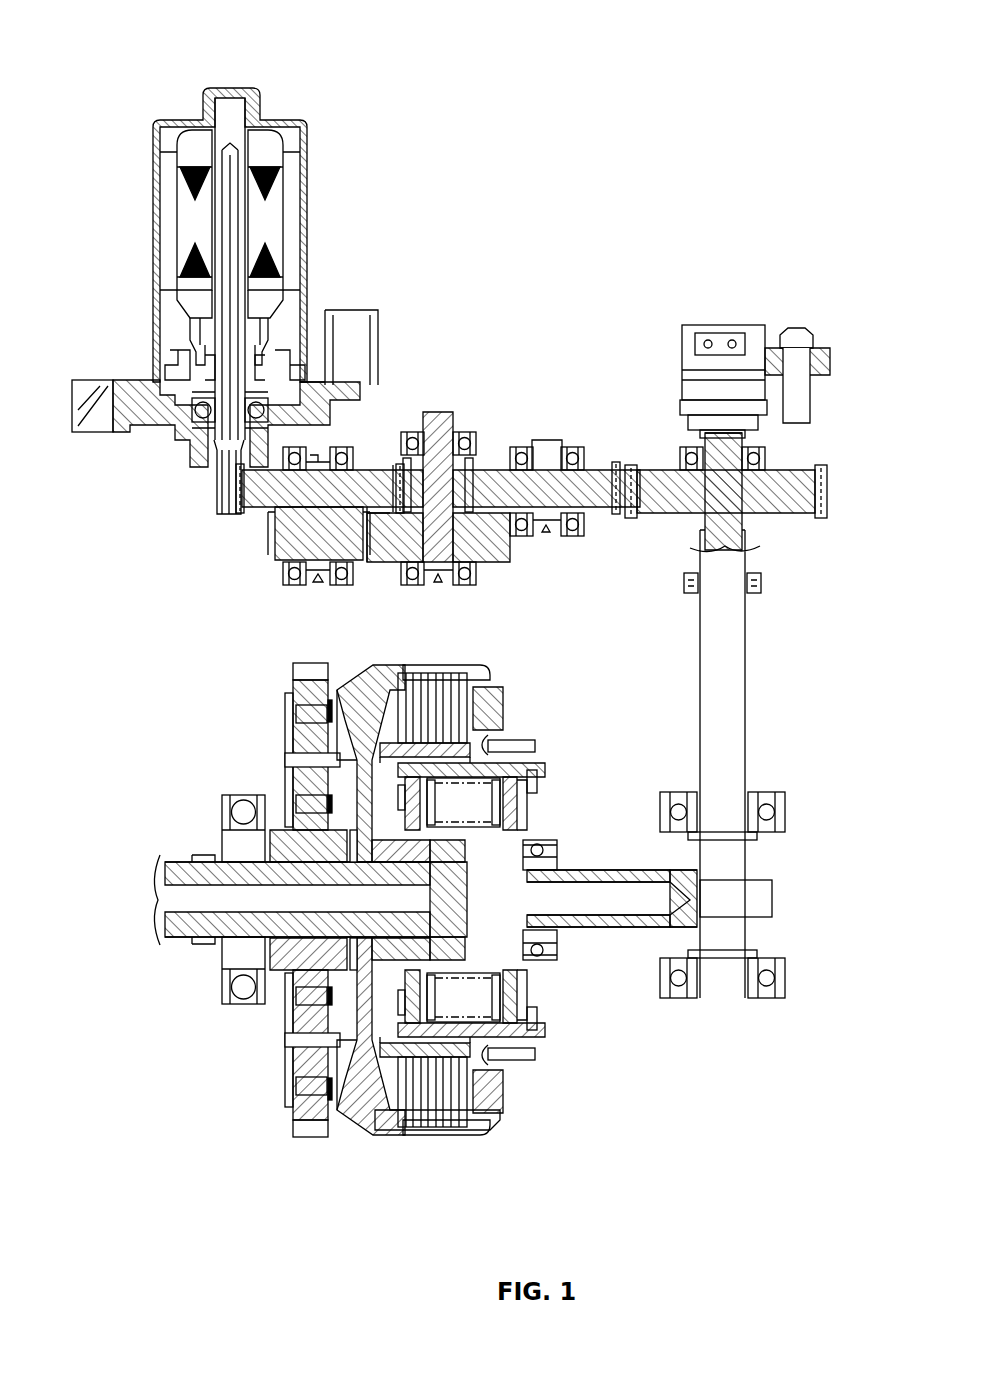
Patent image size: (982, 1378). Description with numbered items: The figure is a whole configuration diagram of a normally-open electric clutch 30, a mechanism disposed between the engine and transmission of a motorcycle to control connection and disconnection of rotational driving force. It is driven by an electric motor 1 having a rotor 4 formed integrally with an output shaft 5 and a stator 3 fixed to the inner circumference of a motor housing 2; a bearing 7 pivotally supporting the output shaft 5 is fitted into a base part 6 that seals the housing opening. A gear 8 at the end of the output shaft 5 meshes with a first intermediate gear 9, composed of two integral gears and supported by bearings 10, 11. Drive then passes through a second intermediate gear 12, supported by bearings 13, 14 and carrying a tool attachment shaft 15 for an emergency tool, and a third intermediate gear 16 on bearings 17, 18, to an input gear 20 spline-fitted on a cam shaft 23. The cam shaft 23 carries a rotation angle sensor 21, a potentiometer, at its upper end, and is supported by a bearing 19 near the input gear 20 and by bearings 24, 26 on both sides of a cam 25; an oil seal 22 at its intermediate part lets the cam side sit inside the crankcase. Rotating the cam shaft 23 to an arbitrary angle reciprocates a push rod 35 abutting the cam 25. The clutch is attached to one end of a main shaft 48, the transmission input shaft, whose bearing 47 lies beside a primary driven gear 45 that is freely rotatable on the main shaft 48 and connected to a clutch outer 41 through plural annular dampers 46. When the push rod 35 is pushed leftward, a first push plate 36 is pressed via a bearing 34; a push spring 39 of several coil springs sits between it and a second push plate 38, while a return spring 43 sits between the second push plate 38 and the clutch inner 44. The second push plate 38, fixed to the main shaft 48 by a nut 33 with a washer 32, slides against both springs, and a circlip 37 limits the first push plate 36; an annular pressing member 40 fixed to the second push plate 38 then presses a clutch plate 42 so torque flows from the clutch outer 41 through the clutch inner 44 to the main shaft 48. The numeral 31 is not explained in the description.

The electric motor 1 is at (176, 112).
The motor housing 2 is at (272, 120).
The stator 3 is at (165, 190).
The rotor 4 is at (180, 233).
The output shaft 5 is at (228, 300).
The base part 6 is at (118, 378).
The bearing 7 is at (188, 428).
The gear 8 is at (214, 492).
The first intermediate gear 9 is at (290, 540).
The bearing 10 is at (340, 452).
The bearing 11 is at (342, 586).
The second intermediate gear 12 is at (455, 548).
The bearing 13 is at (462, 430).
The bearing 14 is at (414, 586).
The tool attachment shaft 15 is at (438, 412).
The third intermediate gear 16 is at (600, 470).
The bearing 17 is at (570, 447).
The bearing 18 is at (567, 536).
The bearing 19 is at (685, 450).
The input gear 20 is at (650, 513).
The rotation angle sensor 21 is at (722, 324).
The oil seal 22 is at (762, 583).
The cam shaft 23 is at (745, 670).
The bearing 24 is at (770, 812).
The cam 25 is at (775, 898).
The bearing 26 is at (770, 978).
The electric clutch 30 is at (595, 1096).
The clutch plate 31 is at (500, 760).
The washer 32 is at (520, 780).
The nut 33 is at (500, 838).
The bearing 34 is at (545, 850).
The push rod 35 is at (624, 927).
The first push plate 36 is at (540, 978).
The circlip 37 is at (547, 1016).
The second push plate 38 is at (535, 1045).
The push spring 39 is at (510, 1062).
The annular pressing member 40 is at (496, 1112).
The clutch outer 41 is at (465, 1128).
The clutch plate 42 is at (425, 1118).
The return spring 43 is at (392, 1017).
The clutch inner 44 is at (358, 1092).
The primary driven gear 45 is at (292, 1125).
The annular damper 46 is at (295, 710).
The bearing 47 is at (243, 815).
The main shaft 48 is at (180, 860).